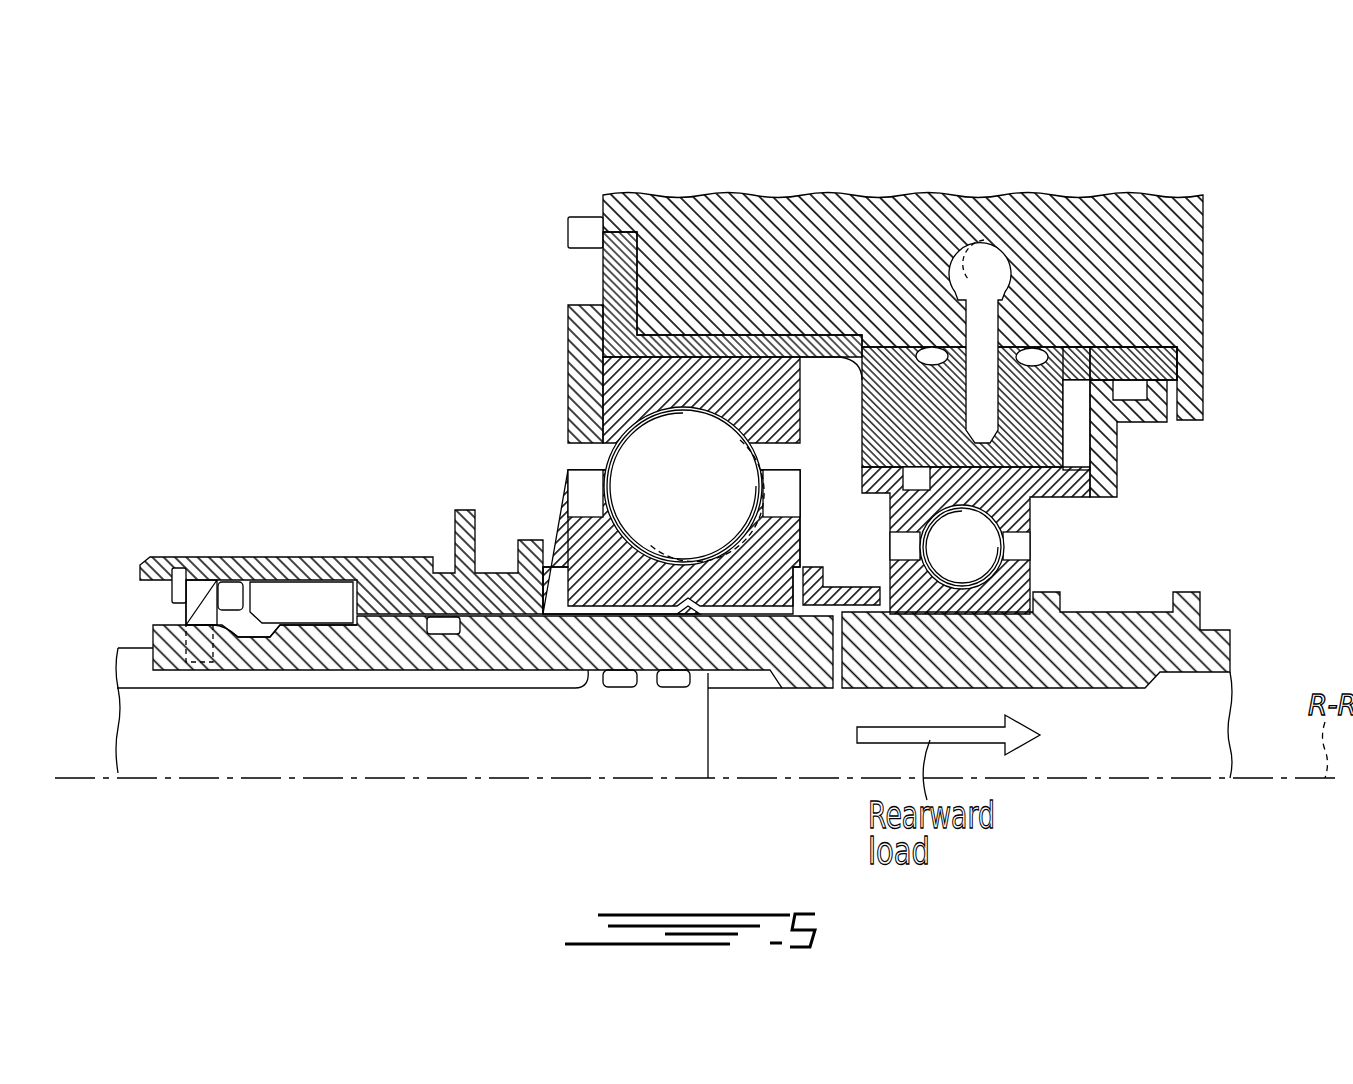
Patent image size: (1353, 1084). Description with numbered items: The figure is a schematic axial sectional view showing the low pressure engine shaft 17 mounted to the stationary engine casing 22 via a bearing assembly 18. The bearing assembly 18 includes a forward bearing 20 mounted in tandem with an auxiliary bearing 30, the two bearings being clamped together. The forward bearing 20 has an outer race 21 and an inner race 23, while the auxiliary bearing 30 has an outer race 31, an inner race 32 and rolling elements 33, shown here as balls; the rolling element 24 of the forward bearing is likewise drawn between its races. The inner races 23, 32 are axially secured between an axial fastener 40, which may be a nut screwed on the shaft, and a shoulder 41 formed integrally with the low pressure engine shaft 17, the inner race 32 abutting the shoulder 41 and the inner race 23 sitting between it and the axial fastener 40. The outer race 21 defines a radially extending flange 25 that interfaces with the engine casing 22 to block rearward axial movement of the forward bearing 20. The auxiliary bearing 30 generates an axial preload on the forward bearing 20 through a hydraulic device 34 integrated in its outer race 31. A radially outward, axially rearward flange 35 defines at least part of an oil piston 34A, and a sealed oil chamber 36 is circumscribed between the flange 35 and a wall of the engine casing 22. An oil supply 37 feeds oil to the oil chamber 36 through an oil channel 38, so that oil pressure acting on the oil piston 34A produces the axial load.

The low pressure engine shaft 17 is at (806, 692).
The bearing assembly 18 is at (428, 172).
The forward bearing 20 is at (550, 396).
The outer race 21 is at (598, 415).
The engine casing 22 is at (1074, 252).
The inner race 23 is at (555, 588).
The roller ball 24 is at (625, 487).
The radially extending flange 25 is at (570, 326).
The auxiliary bearing 30 is at (844, 472).
The outer race 31 is at (1032, 480).
The inner race 32 is at (1012, 590).
The rolling elements 33 is at (975, 540).
The hydraulic device 34 is at (1150, 366).
The oil piston 34A is at (1090, 374).
The flange 35 is at (1118, 440).
The oil chamber 36 is at (1077, 410).
The oil supply 37 is at (982, 312).
The oil channel 38 is at (1035, 400).
The axial fastener 40 is at (393, 608).
The shoulder 41 is at (1062, 598).